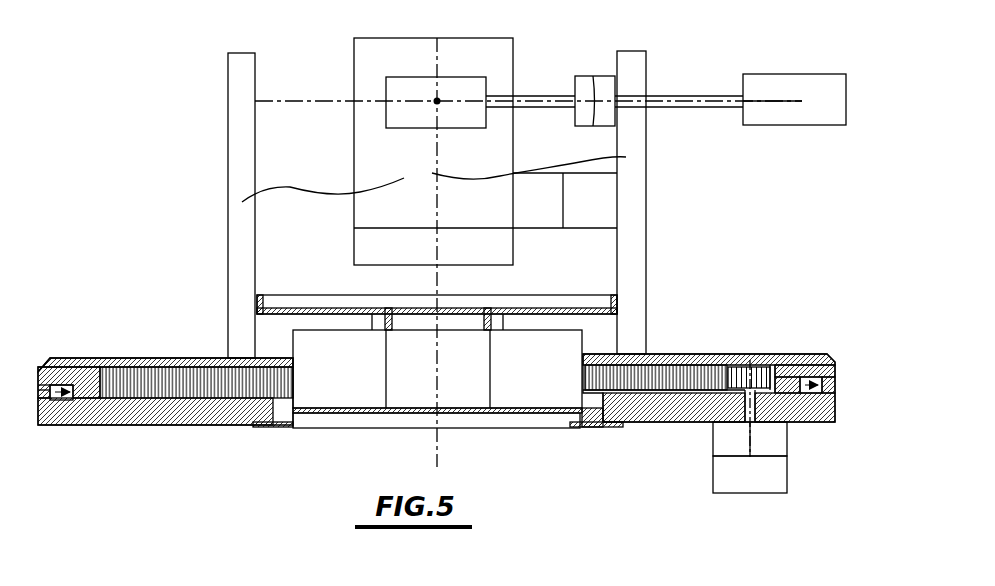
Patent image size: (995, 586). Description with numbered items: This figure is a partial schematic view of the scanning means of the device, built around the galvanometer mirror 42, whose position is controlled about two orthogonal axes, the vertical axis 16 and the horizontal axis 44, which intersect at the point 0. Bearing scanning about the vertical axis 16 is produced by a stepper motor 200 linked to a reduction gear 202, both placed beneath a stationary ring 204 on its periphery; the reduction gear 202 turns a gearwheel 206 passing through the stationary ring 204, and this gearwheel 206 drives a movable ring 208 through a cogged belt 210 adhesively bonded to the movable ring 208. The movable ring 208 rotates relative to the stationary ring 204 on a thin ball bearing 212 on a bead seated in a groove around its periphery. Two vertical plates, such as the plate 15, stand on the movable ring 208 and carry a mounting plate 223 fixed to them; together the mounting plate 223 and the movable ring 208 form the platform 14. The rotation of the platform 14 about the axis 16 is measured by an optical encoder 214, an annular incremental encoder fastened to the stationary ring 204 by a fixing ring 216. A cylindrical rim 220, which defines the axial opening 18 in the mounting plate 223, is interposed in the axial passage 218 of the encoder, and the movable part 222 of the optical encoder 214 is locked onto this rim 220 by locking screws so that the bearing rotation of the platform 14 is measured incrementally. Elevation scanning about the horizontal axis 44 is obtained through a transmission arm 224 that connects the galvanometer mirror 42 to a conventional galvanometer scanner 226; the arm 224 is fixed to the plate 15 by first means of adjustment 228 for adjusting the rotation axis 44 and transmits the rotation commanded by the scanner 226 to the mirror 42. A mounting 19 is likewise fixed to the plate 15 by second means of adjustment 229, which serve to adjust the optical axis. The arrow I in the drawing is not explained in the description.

The intersection point 0 is at (436, 101).
The platform 14 is at (127, 350).
The plate 15 is at (434, 179).
The vertical axis 16 is at (437, 452).
The axial opening 18 is at (457, 317).
The mounting 19 is at (375, 52).
The galvanometer mirror 42 is at (462, 93).
The horizontal axis 44 is at (775, 98).
The direction arrow I is at (561, 80).
The stepper motor 200 is at (742, 478).
The reduction gear 202 is at (735, 433).
The stationary ring 204 is at (808, 423).
The gearwheel 206 is at (733, 363).
The movable ring 208 is at (695, 353).
The cogged belt 210 is at (773, 373).
The thin ball bearing 212 is at (811, 363).
The optical encoder 214 is at (535, 393).
The fixing ring 216 is at (582, 427).
The axial passage 218 is at (437, 379).
The cylindrical rim 220 is at (483, 320).
The movable part 222 is at (372, 323).
The mounting plate 223 is at (560, 310).
The transmission arm 224 is at (510, 98).
The galvanometer scanner 226 is at (800, 108).
The first means of adjustment 228 is at (586, 62).
The second means of adjustment 229 is at (600, 231).